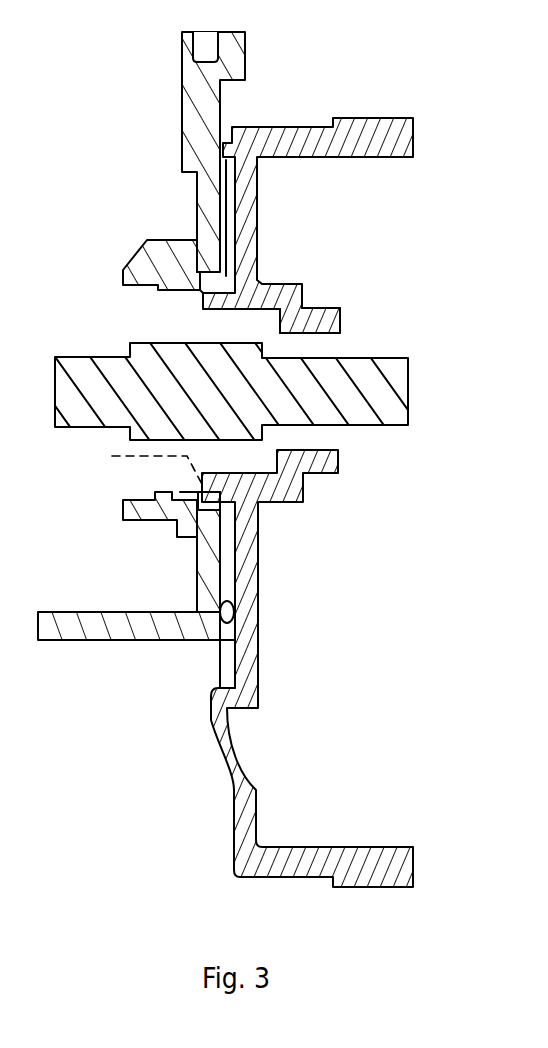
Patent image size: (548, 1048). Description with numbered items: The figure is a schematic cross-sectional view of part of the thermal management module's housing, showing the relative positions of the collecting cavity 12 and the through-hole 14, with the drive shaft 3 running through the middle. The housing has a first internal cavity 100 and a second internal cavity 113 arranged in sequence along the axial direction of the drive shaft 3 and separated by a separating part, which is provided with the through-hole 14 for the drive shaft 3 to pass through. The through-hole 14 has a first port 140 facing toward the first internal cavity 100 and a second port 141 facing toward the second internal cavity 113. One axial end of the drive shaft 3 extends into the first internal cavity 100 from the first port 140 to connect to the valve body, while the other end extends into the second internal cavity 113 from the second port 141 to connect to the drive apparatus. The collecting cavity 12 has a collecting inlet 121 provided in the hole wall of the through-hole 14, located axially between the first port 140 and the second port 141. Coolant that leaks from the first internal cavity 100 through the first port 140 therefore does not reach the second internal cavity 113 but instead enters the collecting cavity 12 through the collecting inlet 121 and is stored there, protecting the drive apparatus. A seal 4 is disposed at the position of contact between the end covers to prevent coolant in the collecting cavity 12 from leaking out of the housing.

The drive shaft 3 is at (398, 378).
The collecting cavity 12 is at (240, 211).
The through-hole 14 is at (262, 318).
The second port 141 is at (352, 340).
The first port 140 is at (110, 298).
The collecting inlet 121 is at (188, 300).
The seal 4 is at (234, 612).
The first internal cavity 100 is at (140, 594).
The second internal cavity 113 is at (268, 646).